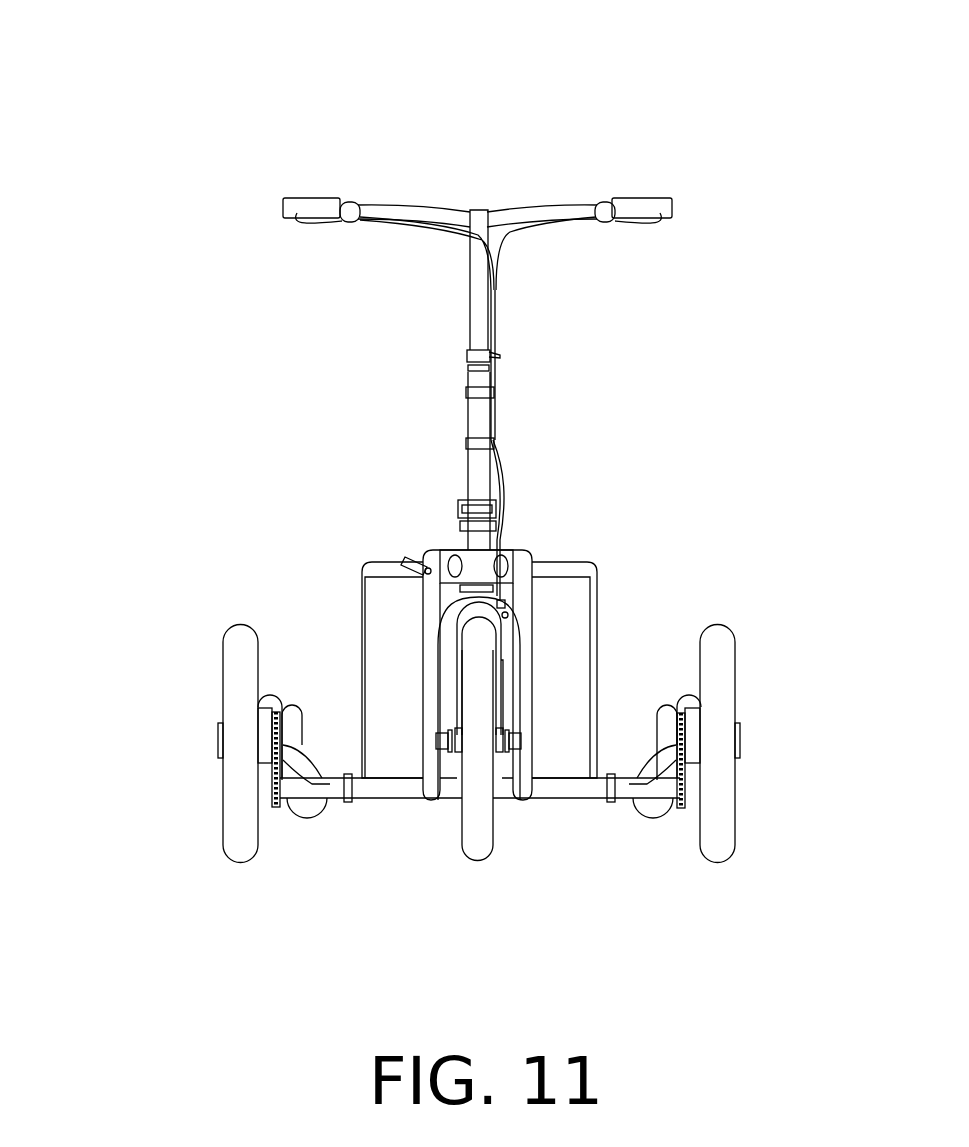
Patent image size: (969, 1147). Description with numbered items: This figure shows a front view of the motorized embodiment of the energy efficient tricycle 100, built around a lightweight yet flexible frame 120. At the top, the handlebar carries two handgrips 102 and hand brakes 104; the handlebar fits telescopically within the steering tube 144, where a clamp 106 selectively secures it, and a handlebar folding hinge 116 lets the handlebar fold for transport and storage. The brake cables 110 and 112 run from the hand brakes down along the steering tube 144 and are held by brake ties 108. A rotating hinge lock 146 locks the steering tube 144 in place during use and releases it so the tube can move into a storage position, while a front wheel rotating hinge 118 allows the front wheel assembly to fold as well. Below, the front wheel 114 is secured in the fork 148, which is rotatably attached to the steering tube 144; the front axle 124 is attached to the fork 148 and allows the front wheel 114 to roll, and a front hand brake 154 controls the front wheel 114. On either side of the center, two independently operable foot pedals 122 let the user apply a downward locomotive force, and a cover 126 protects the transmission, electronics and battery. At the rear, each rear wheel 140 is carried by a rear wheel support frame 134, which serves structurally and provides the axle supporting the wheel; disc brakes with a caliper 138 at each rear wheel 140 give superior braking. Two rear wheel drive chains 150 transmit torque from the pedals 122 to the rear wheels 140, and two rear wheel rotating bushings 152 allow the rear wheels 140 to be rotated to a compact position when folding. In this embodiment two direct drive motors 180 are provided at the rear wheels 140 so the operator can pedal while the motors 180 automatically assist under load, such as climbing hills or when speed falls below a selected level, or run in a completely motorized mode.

The energy efficient tricycle 100 is at (192, 75).
The handgrips 102 is at (321, 205).
The hand brakes 104 is at (327, 223).
The clamp 106 is at (472, 355).
The brake ties 108 is at (495, 392).
The brake cable 110 is at (520, 220).
The brake cable 112 is at (286, 702).
The front wheel 114 is at (478, 842).
The handlebar folding hinge 116 is at (455, 502).
The front wheel rotating hinge 118 is at (484, 612).
The frame 120 is at (523, 608).
The foot pedals 122 is at (362, 570).
The front axle 124 is at (441, 750).
The cover 126 is at (562, 650).
The rear wheel support frame 134 is at (303, 813).
The caliper 138 is at (261, 705).
The rear wheels 140 is at (233, 667).
The steering tube 144 is at (480, 218).
The rotating hinge lock 146 is at (405, 555).
The fork 148 is at (502, 692).
The rear wheel drive chains 150 is at (276, 790).
The rear wheel rotating bushing 152 is at (346, 802).
The front hand brake 154 is at (505, 603).
The direct drive motors 180 is at (272, 752).